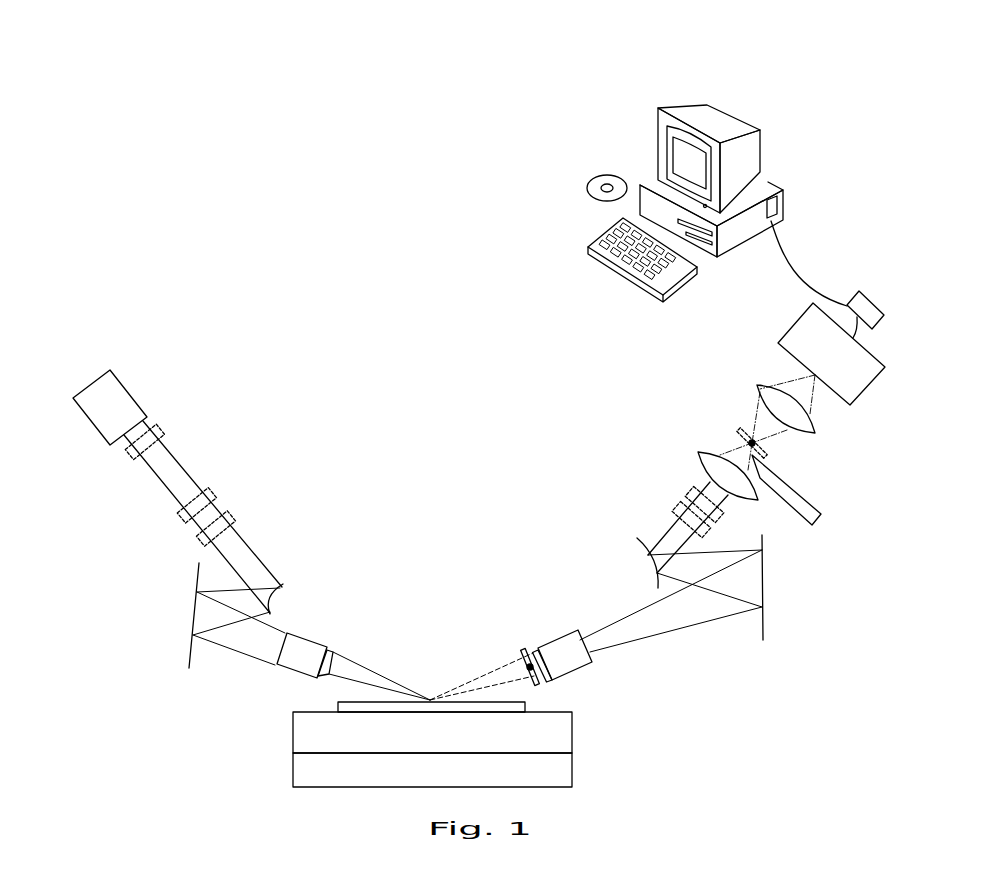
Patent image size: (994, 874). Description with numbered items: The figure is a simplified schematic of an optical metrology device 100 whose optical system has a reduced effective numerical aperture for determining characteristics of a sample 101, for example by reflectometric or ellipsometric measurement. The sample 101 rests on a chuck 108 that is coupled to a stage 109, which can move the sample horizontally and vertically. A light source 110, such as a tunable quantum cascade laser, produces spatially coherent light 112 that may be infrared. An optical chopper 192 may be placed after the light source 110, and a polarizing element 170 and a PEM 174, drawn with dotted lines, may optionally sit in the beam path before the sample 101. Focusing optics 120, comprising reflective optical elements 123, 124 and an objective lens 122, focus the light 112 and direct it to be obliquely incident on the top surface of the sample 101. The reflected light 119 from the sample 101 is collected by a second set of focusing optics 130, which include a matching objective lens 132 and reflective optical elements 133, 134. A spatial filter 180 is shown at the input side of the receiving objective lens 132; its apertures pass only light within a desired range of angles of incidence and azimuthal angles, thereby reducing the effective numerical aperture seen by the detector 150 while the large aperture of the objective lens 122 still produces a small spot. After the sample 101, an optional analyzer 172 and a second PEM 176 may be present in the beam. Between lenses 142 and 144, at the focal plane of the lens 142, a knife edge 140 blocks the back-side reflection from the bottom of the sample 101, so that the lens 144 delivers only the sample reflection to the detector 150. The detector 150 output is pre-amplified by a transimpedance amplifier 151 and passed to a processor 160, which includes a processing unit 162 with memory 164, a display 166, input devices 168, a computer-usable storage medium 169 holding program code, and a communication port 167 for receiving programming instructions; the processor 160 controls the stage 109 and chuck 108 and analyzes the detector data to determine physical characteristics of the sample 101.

The optical metrology device 100 is at (250, 310).
The sample 101 is at (525, 705).
The chuck 108 is at (572, 727).
The stage 109 is at (572, 777).
The light source 110 is at (110, 370).
The light 112 is at (170, 455).
The reflected light 119 is at (503, 668).
The focusing optics 120 is at (350, 535).
The objective lens 122 is at (327, 647).
The reflective optical element 123 is at (283, 585).
The reflective optical element 124 is at (193, 635).
The focusing optics 130 is at (608, 530).
The objective lens 132 is at (557, 640).
The reflective optical element 133 is at (637, 538).
The reflective optical element 134 is at (762, 607).
The knife edge 140 is at (812, 524).
The lens 142 is at (698, 452).
The lens 144 is at (757, 386).
The detector 150 is at (852, 406).
The transimpedance amplifier 151 is at (880, 297).
The processor 160 is at (622, 92).
The processing unit 162 is at (763, 180).
The memory 164 is at (730, 235).
The display 166 is at (660, 108).
The communication port 167 is at (783, 197).
The input devices 168 is at (588, 243).
The computer-usable storage medium 169 is at (587, 180).
The polarizing element 170 is at (213, 493).
The polarizing element (analyzer) 172 is at (689, 491).
The PEM 174 is at (233, 523).
The PEM 176 is at (676, 506).
The spatial filter 180 is at (527, 650).
The optical chopper 192 is at (124, 456).